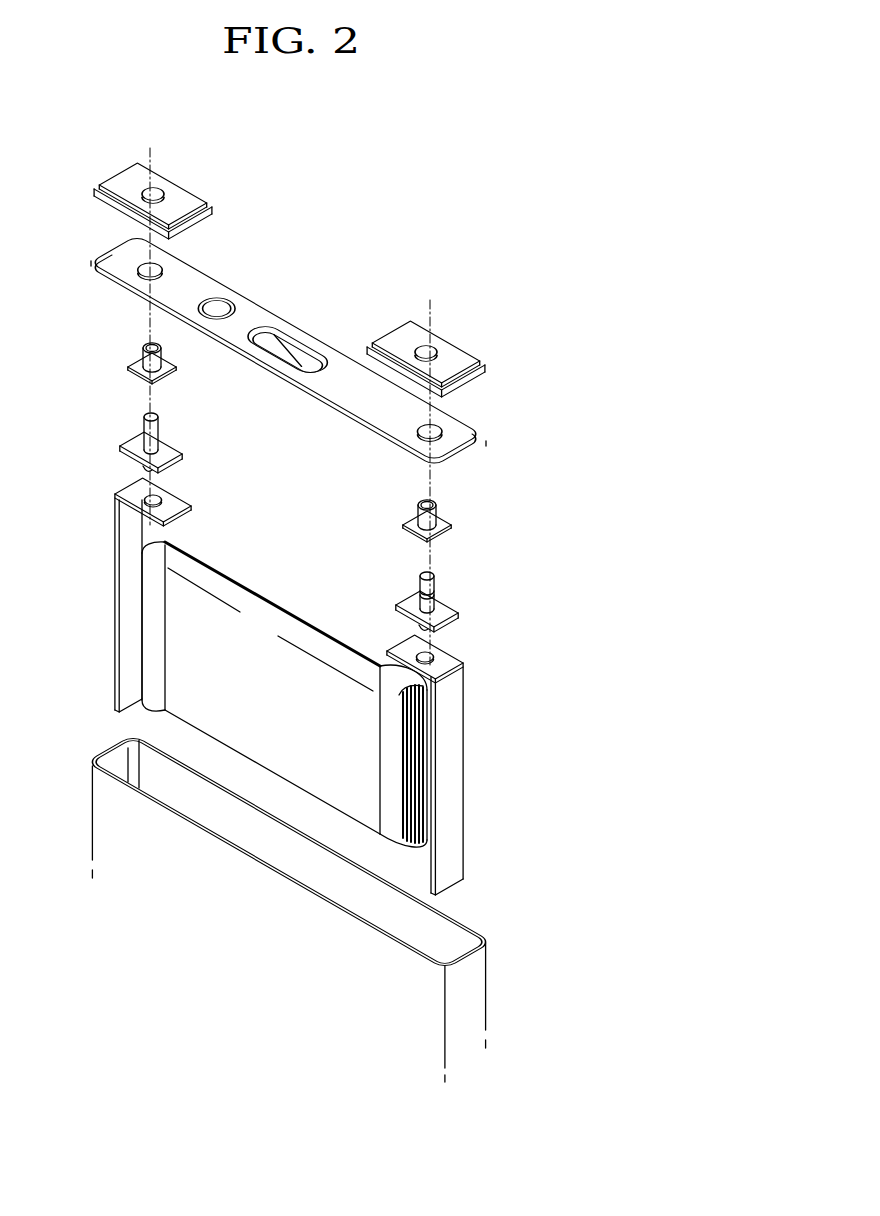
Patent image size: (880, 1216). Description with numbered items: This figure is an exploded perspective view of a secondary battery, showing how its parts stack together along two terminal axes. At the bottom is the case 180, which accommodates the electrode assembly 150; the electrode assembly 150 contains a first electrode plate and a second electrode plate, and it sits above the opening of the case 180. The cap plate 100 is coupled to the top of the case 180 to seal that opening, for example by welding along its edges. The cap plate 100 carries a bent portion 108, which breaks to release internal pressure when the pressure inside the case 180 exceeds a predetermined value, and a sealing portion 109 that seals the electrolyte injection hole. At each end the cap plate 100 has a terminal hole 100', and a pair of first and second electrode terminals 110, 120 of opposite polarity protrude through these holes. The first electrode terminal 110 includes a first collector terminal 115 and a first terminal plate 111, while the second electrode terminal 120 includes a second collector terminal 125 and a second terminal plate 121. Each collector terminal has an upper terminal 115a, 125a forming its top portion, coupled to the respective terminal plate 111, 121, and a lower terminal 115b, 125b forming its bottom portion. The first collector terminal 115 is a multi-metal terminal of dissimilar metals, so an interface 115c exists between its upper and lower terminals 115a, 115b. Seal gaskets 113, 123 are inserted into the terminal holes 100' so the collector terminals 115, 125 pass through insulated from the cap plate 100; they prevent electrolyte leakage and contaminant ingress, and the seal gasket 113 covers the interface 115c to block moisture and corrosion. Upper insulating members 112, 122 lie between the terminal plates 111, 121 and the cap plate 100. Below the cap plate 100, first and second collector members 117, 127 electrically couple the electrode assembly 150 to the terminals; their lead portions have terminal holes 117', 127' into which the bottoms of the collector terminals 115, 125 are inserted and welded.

The cap plate 100 is at (285, 337).
The terminal hole 100' is at (285, 352).
The bent portion 108 is at (288, 342).
The sealing portion 109 is at (220, 300).
The first electrode terminal 110 is at (463, 329).
The first terminal plate 111 is at (392, 330).
The upper insulating member 112 is at (487, 369).
The seal gasket 113 is at (452, 522).
The first collector terminal 115 is at (467, 591).
The upper terminal 115a is at (436, 589).
The lower terminal 115b is at (456, 617).
The interface 115c is at (420, 586).
The first collector member 117 is at (463, 765).
The terminal hole 117' is at (476, 651).
The second electrode terminal 120 is at (192, 171).
The second terminal plate 121 is at (127, 178).
The upper insulating member 122 is at (214, 214).
The seal gasket 123 is at (133, 362).
The second collector terminal 125 is at (93, 428).
The upper terminal 125a is at (144, 420).
The lower terminal 125b is at (133, 442).
The second collector member 127 is at (138, 581).
The terminal hole 127' is at (189, 480).
The electrode assembly 150 is at (270, 612).
The case 180 is at (104, 752).